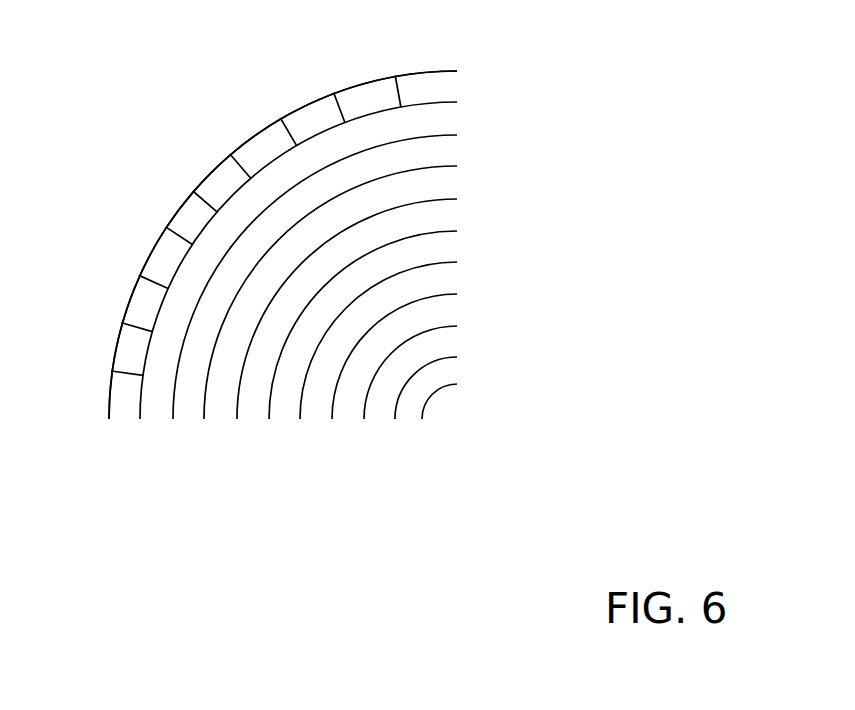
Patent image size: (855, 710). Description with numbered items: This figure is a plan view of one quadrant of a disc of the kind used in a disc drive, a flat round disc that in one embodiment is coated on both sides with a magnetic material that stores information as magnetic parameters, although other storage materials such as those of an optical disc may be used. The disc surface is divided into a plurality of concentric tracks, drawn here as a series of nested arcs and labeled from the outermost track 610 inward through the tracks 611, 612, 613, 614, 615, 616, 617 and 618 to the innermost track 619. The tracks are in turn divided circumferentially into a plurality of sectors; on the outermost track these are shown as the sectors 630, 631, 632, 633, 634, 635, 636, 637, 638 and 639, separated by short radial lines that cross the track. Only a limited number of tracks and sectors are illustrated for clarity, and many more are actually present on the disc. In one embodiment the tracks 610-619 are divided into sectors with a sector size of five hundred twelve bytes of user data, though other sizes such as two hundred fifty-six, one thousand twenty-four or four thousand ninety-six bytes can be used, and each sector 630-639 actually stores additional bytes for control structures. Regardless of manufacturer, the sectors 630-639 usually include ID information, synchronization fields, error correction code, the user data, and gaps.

The track 610 is at (452, 88).
The track 611 is at (452, 119).
The track 612 is at (452, 152).
The track 613 is at (452, 183).
The track 614 is at (452, 214).
The track 615 is at (452, 245).
The track 616 is at (452, 278).
The track 617 is at (452, 309).
The track 618 is at (452, 340).
The track 619 is at (452, 371).
The sector 630 is at (117, 395).
The sector 631 is at (127, 348).
The sector 632 is at (142, 300).
The sector 633 is at (165, 254).
The sector 634 is at (190, 214).
The sector 635 is at (222, 173).
The sector 636 is at (270, 135).
The sector 637 is at (301, 120).
The sector 638 is at (357, 97).
The sector 639 is at (437, 80).